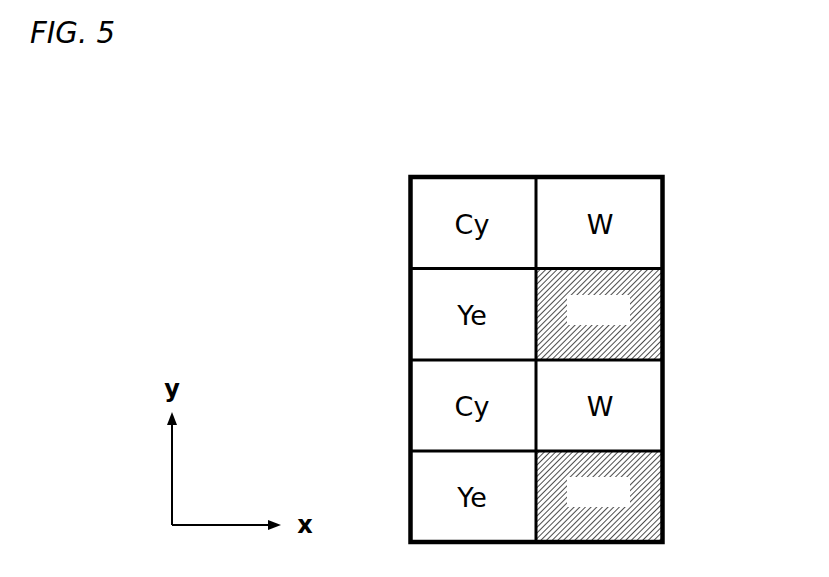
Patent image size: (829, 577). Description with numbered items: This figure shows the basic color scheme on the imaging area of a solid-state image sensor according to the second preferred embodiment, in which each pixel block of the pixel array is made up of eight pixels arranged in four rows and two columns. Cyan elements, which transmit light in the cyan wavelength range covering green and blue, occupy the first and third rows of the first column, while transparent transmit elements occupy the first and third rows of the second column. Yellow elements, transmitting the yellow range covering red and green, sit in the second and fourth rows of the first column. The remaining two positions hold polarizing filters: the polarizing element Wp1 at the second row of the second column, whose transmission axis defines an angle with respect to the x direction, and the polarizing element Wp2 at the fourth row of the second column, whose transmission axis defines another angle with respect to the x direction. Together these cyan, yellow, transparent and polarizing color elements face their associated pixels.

The polarizing element Wp1 is at (599, 314).
The polarizing element Wp2 is at (599, 496).